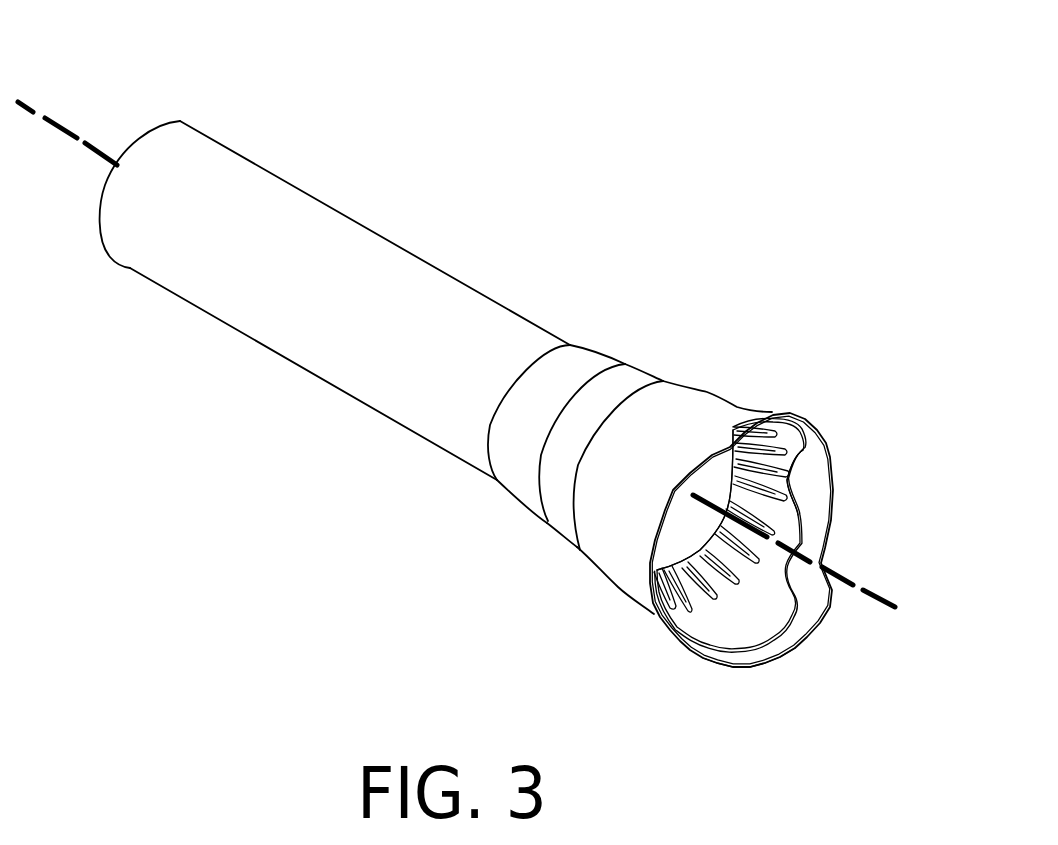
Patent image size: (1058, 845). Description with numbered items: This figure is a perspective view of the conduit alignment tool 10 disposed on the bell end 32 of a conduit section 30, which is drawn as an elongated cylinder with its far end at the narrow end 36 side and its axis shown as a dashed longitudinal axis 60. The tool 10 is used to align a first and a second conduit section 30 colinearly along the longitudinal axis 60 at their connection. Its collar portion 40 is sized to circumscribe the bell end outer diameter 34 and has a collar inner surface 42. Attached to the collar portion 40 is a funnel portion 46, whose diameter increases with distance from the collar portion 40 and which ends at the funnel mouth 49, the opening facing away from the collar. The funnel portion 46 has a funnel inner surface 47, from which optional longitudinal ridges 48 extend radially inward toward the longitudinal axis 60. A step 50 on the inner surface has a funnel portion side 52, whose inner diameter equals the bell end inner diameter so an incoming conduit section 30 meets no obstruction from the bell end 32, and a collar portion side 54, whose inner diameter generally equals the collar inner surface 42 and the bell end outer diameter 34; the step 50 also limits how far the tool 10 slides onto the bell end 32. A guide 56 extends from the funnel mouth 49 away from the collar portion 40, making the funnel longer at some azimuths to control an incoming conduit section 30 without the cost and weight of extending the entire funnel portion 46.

The conduit alignment tool 10 is at (772, 247).
The conduit section 30 is at (230, 143).
The bell end 32 is at (598, 347).
The bell end outer diameter 34 is at (512, 498).
The narrow end 36 is at (130, 268).
The collar portion 40 is at (698, 380).
The collar inner surface 42 is at (722, 465).
The funnel portion 46 is at (827, 437).
The funnel inner surface 47 is at (790, 517).
The longitudinal ridges 48 is at (704, 567).
The funnel mouth 49 is at (849, 523).
The step 50 is at (744, 587).
The funnel portion side 52 is at (738, 586).
The collar portion side 54 is at (683, 541).
The guide 56 is at (815, 622).
The longitudinal axis 60 is at (67, 128).